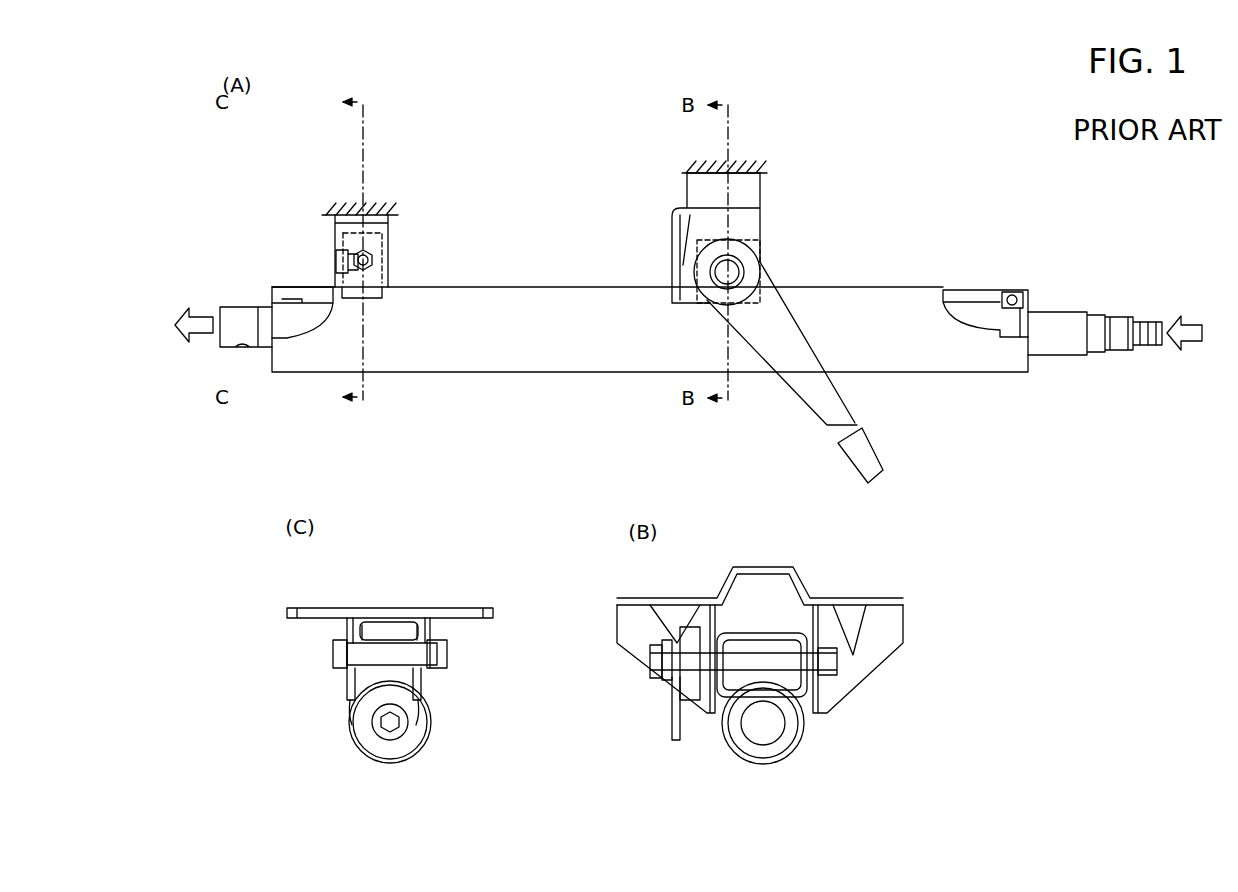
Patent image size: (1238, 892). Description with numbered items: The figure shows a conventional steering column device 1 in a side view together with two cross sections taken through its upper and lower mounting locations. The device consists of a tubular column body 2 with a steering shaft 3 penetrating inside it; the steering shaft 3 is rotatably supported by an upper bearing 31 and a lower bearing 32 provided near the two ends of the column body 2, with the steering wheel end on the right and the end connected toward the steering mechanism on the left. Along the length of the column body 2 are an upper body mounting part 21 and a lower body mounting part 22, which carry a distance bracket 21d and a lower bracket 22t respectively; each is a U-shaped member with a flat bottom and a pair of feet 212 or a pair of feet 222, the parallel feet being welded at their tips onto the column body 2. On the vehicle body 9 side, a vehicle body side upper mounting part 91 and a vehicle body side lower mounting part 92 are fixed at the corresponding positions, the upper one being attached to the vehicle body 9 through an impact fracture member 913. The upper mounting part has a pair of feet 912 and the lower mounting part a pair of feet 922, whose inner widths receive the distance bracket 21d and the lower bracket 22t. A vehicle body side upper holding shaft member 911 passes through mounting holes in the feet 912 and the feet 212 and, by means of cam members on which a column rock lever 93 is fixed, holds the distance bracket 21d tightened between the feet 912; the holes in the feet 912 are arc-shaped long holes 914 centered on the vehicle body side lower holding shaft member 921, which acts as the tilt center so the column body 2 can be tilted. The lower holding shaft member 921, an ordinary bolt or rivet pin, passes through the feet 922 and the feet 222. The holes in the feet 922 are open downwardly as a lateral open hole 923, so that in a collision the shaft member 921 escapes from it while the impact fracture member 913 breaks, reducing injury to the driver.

The steering column device 1 is at (564, 68).
The column body 2 is at (532, 362).
The steering shaft 3 is at (1055, 345).
The vehicle body 9 is at (370, 200).
The upper body mounting part 21 is at (765, 262).
The distance bracket 21d is at (760, 270).
The lower body mounting part 22 is at (397, 272).
The lower bracket 22t is at (383, 293).
The upper bearing 31 is at (1030, 300).
The lower bearing 32 is at (285, 287).
The vehicle body side upper mounting part 91 is at (767, 213).
The vehicle body side lower mounting part 92 is at (397, 233).
The column rock lever 93 is at (828, 425).
The vehicle body side upper holding shaft member 911 is at (833, 660).
The feet of the vehicle body side upper mounting part 912 is at (712, 620).
The impact fracture member 913 is at (687, 190).
The arc-shaped long holes 914 is at (830, 603).
The vehicle body side lower holding shaft member 921 is at (450, 656).
The feet of the vehicle body side lower mounting part 922 is at (333, 636).
The lateral open hole 923 is at (342, 258).
The feet of the distance bracket 212 is at (793, 634).
The feet of the lower bracket 222 is at (355, 620).